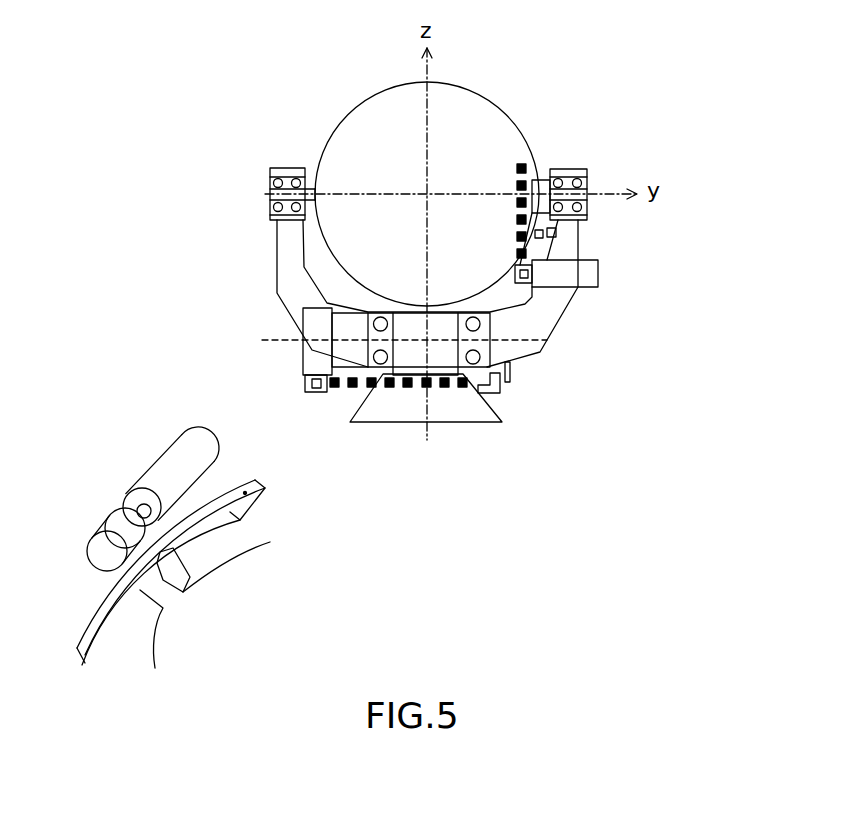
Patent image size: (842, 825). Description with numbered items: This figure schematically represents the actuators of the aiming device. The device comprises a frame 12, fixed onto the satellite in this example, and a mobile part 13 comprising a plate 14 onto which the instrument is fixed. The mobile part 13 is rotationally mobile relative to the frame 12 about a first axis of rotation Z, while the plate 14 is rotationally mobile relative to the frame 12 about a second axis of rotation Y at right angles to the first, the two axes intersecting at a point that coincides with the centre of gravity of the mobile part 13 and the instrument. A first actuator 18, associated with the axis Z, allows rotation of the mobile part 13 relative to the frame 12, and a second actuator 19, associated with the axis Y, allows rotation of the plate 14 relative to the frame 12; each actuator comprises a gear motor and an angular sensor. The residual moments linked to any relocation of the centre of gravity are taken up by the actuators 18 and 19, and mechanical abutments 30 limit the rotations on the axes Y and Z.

The frame 12 is at (497, 410).
The mobile part 13 is at (692, 55).
The plate 14 is at (312, 185).
The first actuator 18 is at (337, 400).
The second actuator 19 is at (602, 278).
The mechanical abutments 30 is at (542, 248).